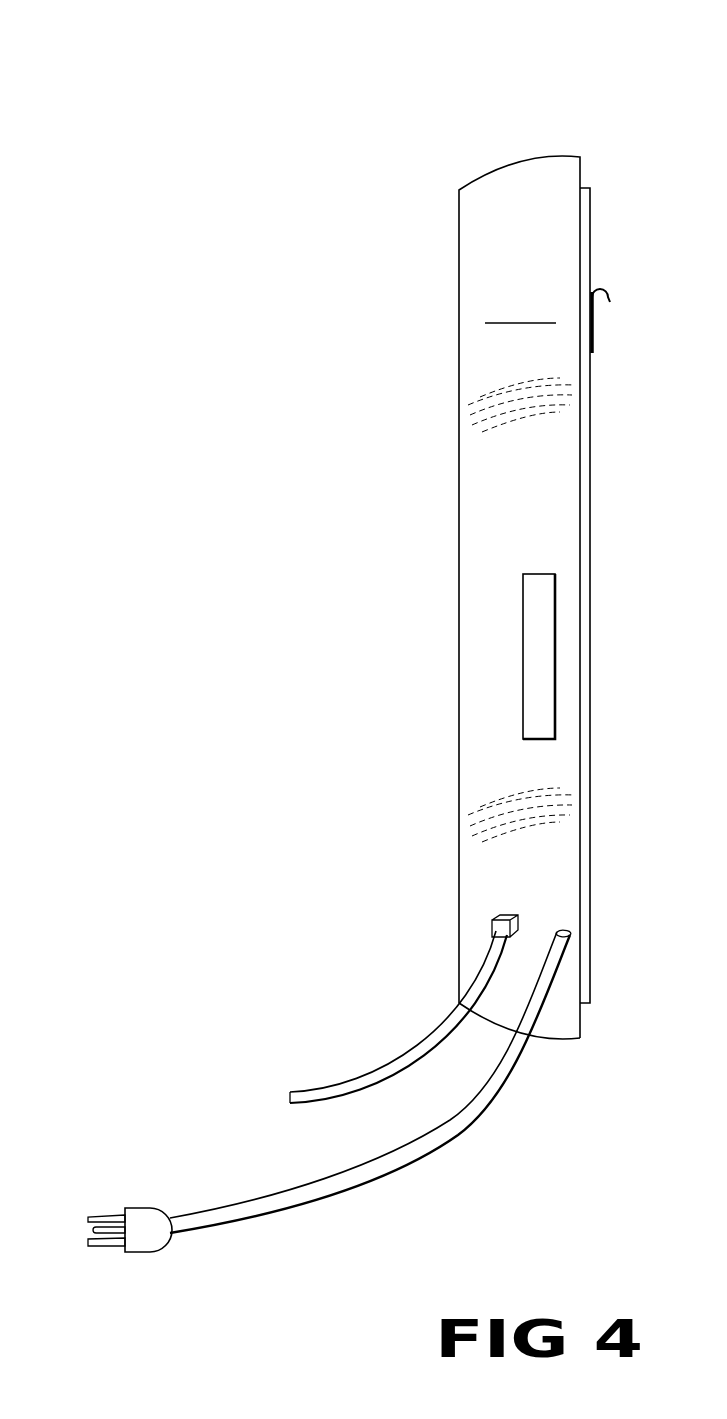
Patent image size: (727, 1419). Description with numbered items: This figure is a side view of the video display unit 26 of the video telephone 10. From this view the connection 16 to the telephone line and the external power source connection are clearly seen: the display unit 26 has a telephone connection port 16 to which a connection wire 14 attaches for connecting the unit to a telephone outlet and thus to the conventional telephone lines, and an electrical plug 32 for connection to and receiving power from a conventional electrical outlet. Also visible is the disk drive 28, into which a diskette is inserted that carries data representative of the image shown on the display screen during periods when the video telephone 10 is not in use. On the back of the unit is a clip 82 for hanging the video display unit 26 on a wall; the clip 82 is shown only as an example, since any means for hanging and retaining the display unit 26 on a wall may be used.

The video telephone 10 is at (372, 110).
The connection wire 14 is at (397, 1075).
The telephone connection port 16 is at (502, 917).
The video display unit 26 is at (520, 297).
The disk drive 28 is at (540, 596).
The electrical plug 32 is at (433, 1123).
The clip 82 is at (594, 290).